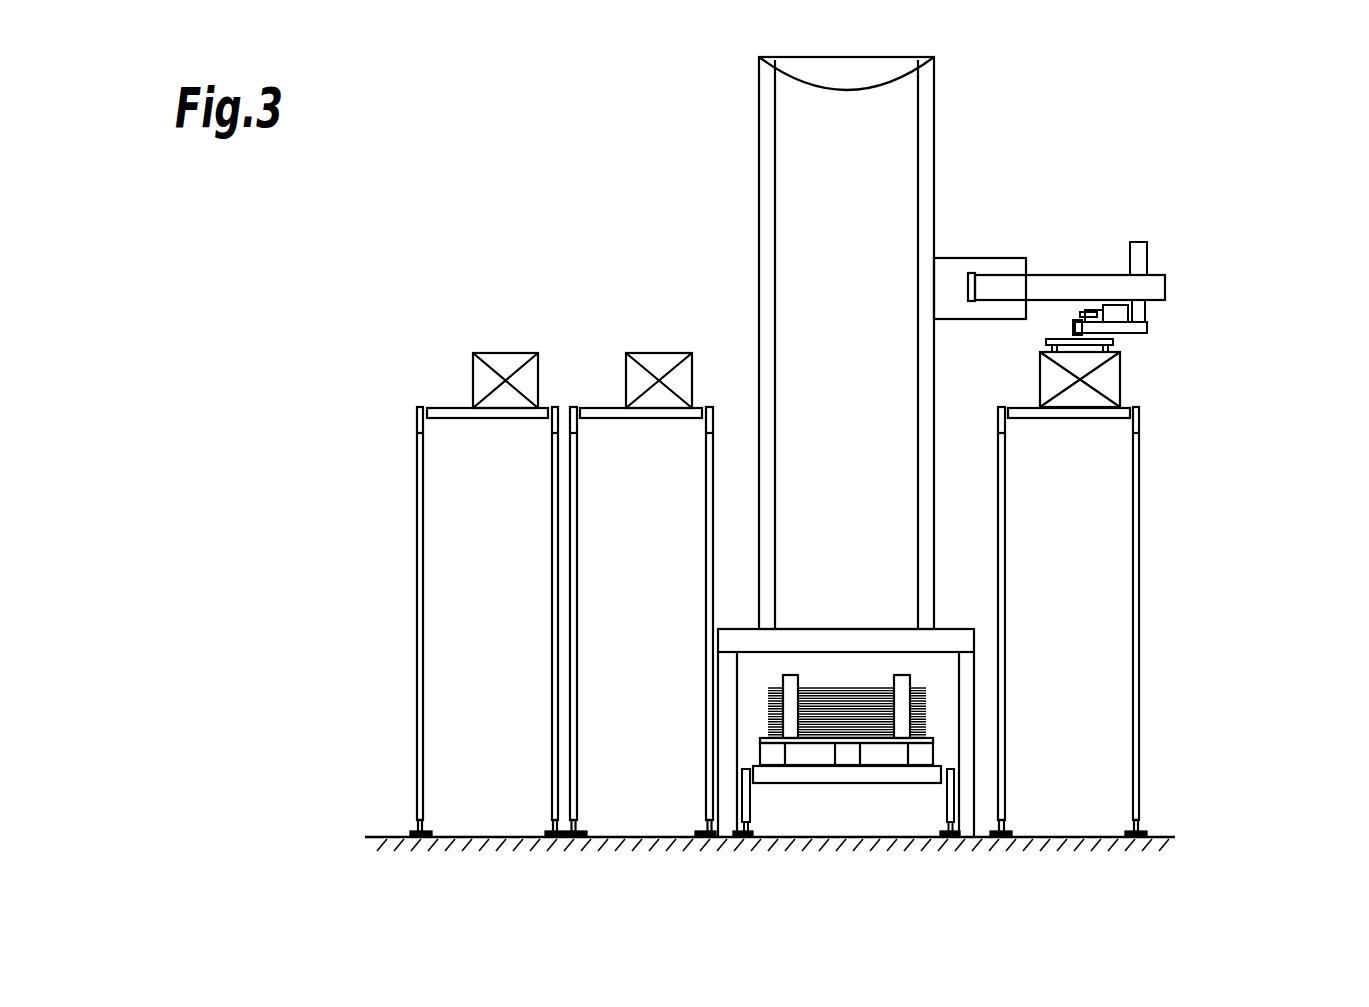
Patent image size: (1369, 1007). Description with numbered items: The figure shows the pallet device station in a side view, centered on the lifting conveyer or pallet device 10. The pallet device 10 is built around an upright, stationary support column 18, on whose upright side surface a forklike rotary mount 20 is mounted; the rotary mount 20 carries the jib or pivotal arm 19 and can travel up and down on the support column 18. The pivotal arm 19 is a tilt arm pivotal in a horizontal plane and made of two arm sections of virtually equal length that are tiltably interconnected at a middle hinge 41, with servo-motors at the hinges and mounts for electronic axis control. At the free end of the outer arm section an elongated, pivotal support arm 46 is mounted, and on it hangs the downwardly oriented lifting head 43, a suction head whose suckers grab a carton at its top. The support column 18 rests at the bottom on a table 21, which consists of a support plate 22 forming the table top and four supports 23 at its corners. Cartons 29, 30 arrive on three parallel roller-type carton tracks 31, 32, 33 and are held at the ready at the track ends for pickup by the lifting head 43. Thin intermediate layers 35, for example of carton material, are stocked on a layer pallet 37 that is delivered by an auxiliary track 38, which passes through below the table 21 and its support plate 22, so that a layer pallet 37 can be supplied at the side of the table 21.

The pallet device 10 is at (908, 343).
The support column 18 is at (897, 230).
The pivotal arm 19 is at (1110, 223).
The rotary mount 20 is at (1002, 285).
The middle hinge 41 is at (1145, 295).
The support arm 46 is at (1147, 326).
The lifting head 43 is at (1077, 330).
The carton 30 is at (1110, 377).
The carton track 33 is at (1126, 622).
The table 21 is at (995, 678).
The support plate 22 is at (960, 639).
The supports 23 is at (963, 768).
The intermediate layers 35 is at (927, 715).
The layer pallet 37 is at (775, 753).
The auxiliary track 38 is at (858, 795).
The carton track 31 is at (378, 345).
The carton track 32 is at (595, 287).
The carton 29 is at (502, 362).